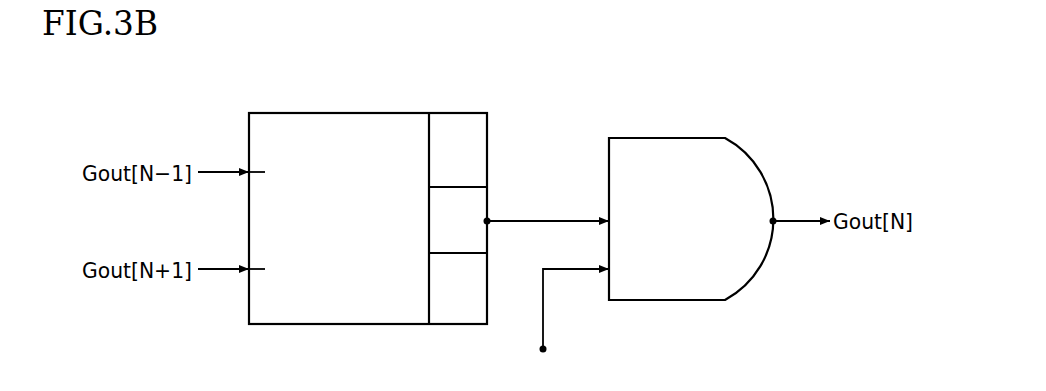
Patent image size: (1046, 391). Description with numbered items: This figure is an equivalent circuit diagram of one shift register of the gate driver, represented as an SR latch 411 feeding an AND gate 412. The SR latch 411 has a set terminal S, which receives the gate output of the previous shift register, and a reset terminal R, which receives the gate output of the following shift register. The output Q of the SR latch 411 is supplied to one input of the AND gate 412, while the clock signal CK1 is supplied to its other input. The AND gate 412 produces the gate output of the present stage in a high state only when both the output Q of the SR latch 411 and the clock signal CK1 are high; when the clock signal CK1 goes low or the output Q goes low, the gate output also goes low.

The SR latch 411 is at (370, 198).
The AND gate 412 is at (691, 197).
The set terminal S is at (268, 175).
The reset terminal R is at (269, 272).
The output of the SR latch Q is at (471, 224).
The clock signal CK1 is at (567, 326).